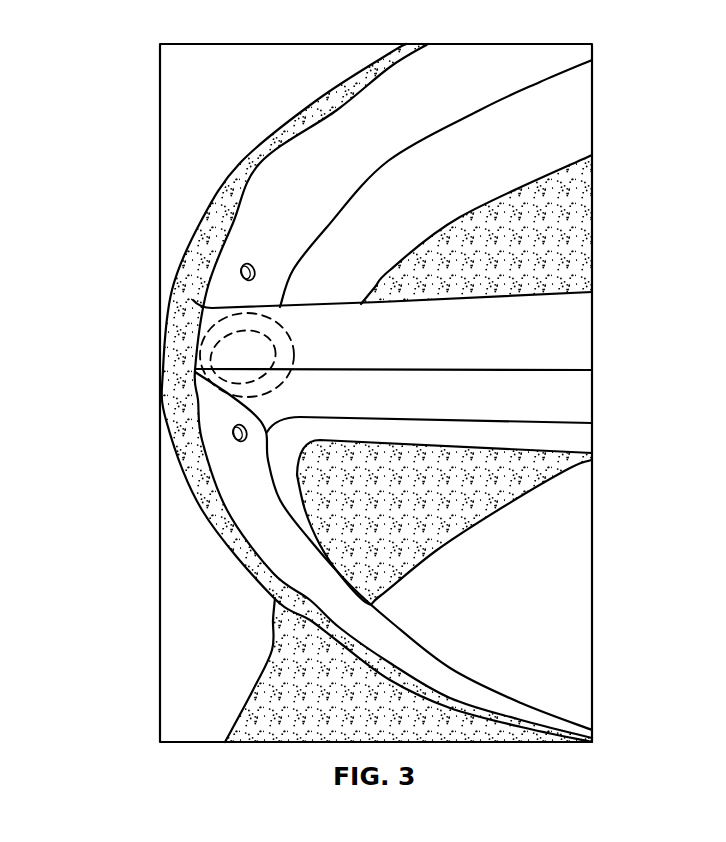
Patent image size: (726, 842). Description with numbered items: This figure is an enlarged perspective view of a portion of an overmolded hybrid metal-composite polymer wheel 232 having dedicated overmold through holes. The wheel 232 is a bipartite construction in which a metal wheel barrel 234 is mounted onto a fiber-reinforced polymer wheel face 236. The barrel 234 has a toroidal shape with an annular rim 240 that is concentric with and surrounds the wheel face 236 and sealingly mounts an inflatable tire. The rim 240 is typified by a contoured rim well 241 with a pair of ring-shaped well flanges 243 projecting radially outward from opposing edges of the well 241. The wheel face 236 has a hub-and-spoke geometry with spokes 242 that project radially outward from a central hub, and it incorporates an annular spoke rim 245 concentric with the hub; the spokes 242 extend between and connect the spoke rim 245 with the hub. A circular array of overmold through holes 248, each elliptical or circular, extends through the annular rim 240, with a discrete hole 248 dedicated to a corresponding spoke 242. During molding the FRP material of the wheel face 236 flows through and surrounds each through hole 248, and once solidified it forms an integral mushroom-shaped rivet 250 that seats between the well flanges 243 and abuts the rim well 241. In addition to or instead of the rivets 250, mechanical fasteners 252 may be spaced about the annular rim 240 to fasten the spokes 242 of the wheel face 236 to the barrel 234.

The hybrid metal-composite polymer wheel 232 is at (188, 75).
The metal wheel barrel 234 is at (205, 193).
The fiber-reinforced polymer wheel face 236 is at (245, 165).
The annular rim 240 is at (168, 322).
The rim well 241 is at (270, 650).
The spoke 242 is at (530, 312).
The well flange 243 is at (202, 510).
The annular spoke rim 245 is at (238, 457).
The overmold through hole 248 is at (232, 330).
The mushroom-shaped rivet 250 is at (212, 315).
The mechanical fastener 252 is at (247, 262).